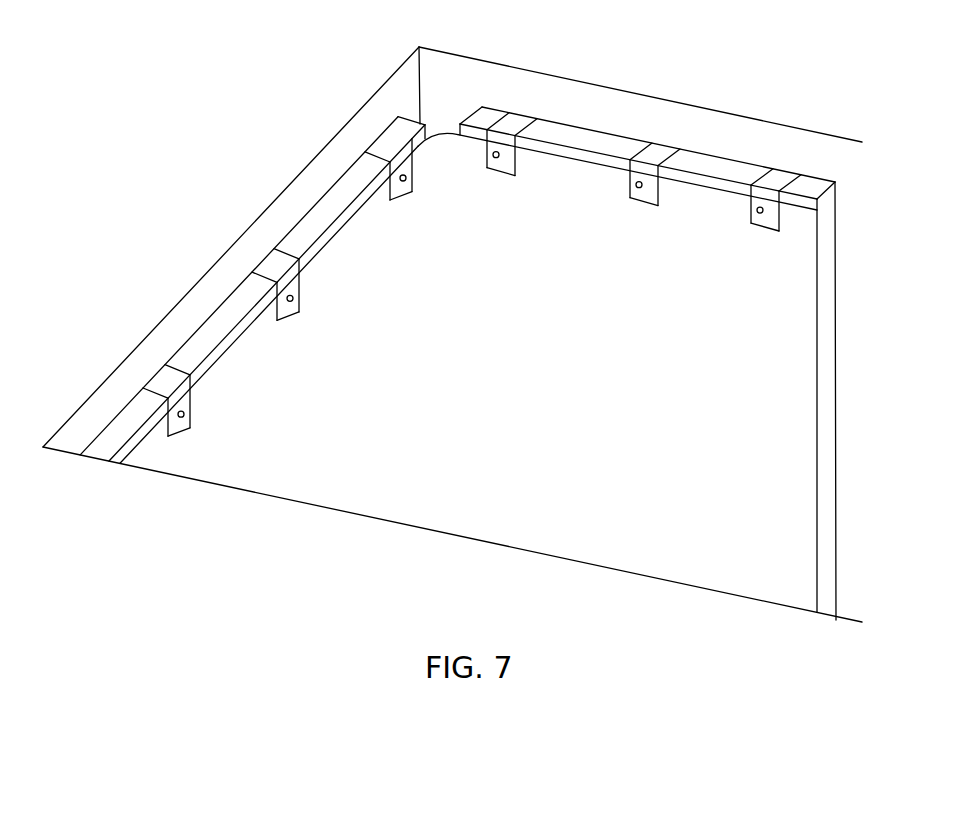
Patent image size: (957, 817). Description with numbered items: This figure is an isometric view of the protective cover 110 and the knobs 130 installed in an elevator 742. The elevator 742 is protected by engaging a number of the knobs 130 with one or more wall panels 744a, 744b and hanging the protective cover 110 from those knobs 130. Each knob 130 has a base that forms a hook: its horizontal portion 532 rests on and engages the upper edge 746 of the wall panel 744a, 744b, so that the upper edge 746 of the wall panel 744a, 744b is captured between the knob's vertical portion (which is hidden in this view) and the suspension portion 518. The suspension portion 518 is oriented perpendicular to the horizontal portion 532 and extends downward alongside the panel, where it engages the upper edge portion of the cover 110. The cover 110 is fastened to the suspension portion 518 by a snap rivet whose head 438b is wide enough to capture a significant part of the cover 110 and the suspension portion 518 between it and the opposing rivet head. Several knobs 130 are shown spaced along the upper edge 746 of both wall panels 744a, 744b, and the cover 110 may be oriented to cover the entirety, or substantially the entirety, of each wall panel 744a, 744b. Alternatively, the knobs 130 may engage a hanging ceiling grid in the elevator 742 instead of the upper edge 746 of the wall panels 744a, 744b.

The protective cover 110 is at (634, 359).
The knob 130 is at (442, 242).
The elevator 742 is at (446, 349).
The wall panel 744a is at (828, 593).
The wall panel 744b is at (467, 298).
The upper edge 746 is at (312, 232).
The horizontal portion 532 is at (390, 138).
The head 438b is at (182, 420).
The suspension portion 518 is at (192, 405).